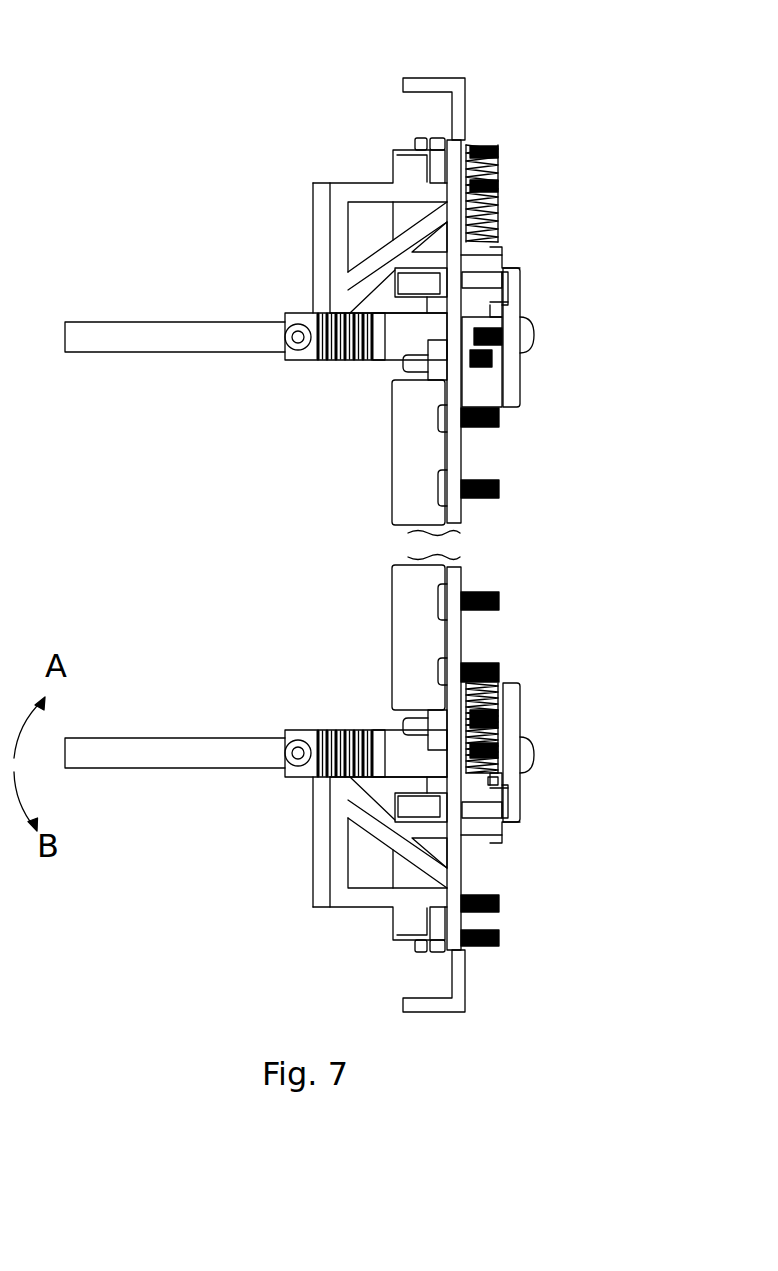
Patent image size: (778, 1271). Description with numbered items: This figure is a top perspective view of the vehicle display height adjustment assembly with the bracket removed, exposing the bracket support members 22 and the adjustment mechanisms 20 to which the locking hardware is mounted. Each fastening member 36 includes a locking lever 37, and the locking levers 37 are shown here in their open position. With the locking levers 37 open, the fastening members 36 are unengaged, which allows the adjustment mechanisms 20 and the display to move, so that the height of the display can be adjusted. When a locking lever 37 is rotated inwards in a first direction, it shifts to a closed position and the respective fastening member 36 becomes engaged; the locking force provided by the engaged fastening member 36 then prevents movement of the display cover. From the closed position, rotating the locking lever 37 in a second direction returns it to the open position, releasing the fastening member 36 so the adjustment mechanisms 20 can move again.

The adjustment mechanism 20 is at (350, 456).
The bracket support member 22 is at (333, 183).
The fastening member 36 is at (522, 285).
The locking lever 37 is at (158, 322).